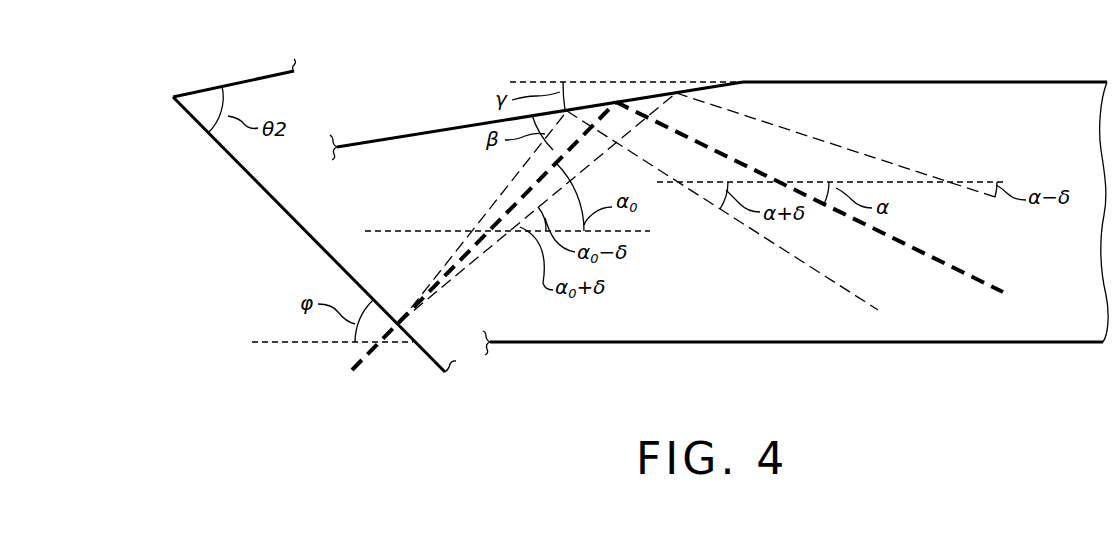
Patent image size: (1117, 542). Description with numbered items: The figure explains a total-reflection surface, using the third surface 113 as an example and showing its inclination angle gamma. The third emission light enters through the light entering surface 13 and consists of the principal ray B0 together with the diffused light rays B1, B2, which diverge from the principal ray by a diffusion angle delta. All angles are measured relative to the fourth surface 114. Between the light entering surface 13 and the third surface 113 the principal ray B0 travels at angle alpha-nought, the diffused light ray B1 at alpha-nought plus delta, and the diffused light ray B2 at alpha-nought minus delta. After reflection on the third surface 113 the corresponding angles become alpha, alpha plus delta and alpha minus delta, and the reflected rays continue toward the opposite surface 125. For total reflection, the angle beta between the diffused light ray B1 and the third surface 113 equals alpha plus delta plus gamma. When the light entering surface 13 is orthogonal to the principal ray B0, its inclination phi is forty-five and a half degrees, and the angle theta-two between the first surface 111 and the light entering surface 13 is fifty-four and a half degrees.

The light entering surface 13 is at (280, 205).
The first surface 111 is at (257, 79).
The third surface 113 is at (400, 137).
The fourth surface 114 is at (912, 81).
The bottom surface 125 is at (980, 342).
The principal ray B0 is at (518, 187).
The diffused light ray B1 is at (500, 206).
The diffused light ray B2 is at (470, 267).